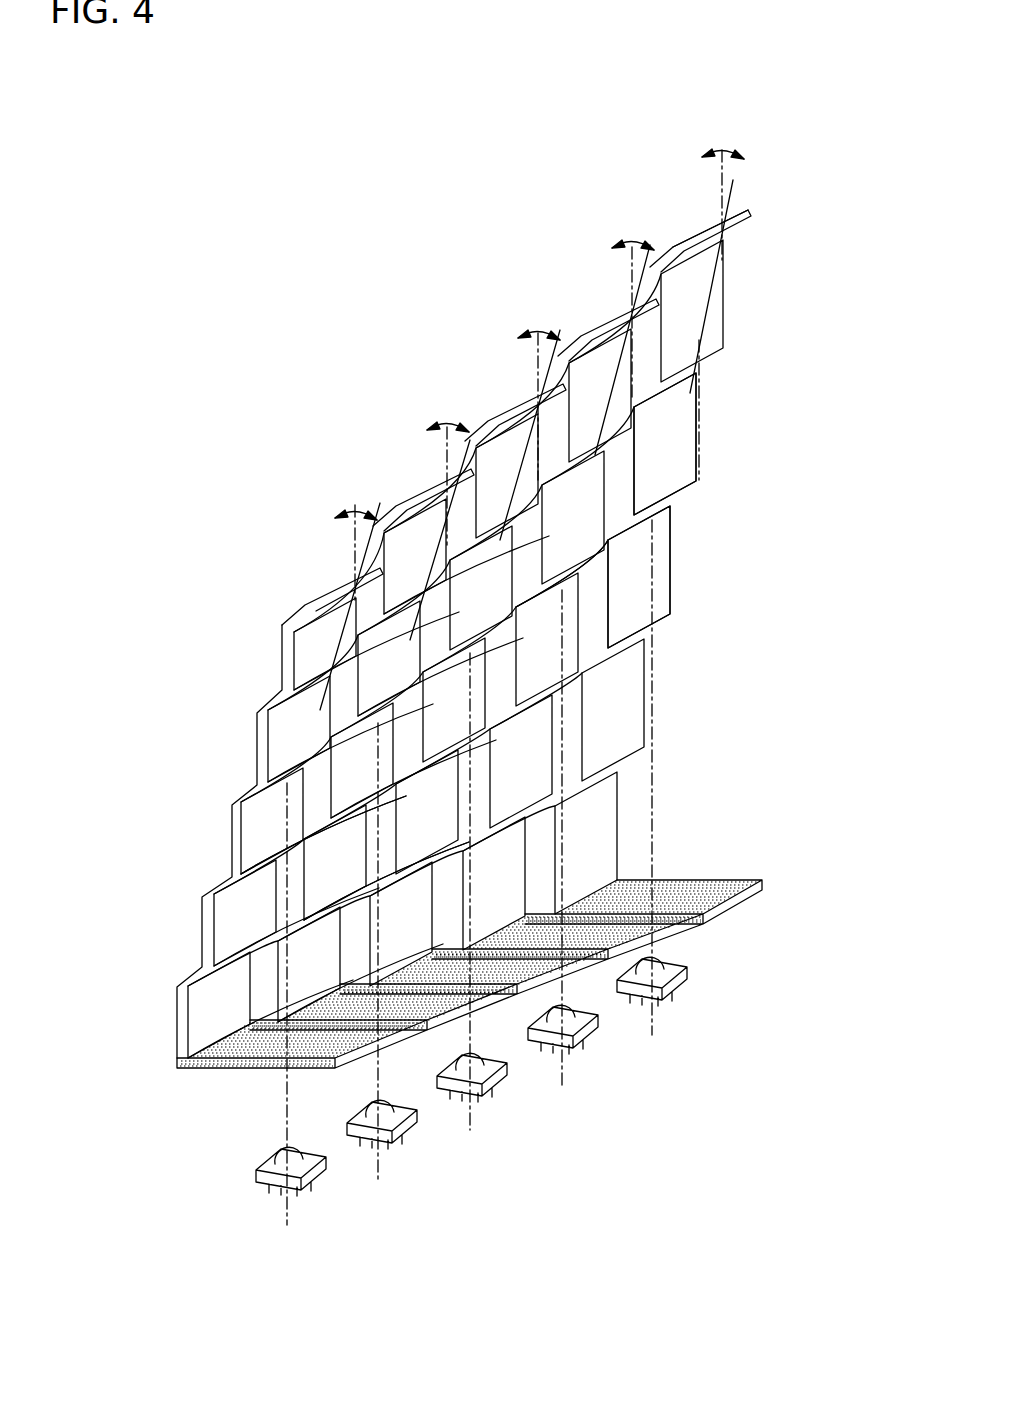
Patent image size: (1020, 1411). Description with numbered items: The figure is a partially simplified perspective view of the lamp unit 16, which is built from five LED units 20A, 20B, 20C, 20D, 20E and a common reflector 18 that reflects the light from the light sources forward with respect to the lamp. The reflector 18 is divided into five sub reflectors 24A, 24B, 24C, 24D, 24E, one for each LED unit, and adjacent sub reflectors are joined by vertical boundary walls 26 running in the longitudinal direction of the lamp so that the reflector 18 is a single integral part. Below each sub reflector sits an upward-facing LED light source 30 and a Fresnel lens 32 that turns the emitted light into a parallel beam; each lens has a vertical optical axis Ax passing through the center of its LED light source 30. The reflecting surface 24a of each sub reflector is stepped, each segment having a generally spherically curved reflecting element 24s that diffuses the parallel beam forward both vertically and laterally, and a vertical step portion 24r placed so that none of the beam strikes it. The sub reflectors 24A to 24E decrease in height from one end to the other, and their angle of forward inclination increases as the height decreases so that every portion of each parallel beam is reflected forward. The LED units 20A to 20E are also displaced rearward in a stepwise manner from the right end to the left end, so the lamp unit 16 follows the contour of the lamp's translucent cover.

The lamp unit 16 is at (283, 310).
The reflector 18 is at (281, 672).
The sub reflector 24A is at (340, 590).
The sub reflector 24B is at (430, 500).
The sub reflector 24C is at (523, 410).
The sub reflector 24D is at (615, 315).
The sub reflector 24E is at (710, 221).
The reflecting surface 24a is at (588, 540).
The step portion 24r is at (676, 447).
The reflecting element 24s is at (705, 365).
The vertical boundary wall 26 is at (387, 843).
The LED light source 30 is at (653, 965).
The Fresnel lens 32 is at (710, 880).
The LED unit 20A is at (347, 1197).
The LED unit 20B is at (439, 1152).
The LED unit 20C is at (527, 1102).
The LED unit 20D is at (619, 1054).
The LED unit 20E is at (709, 1006).
The optical axis Ax is at (657, 717).